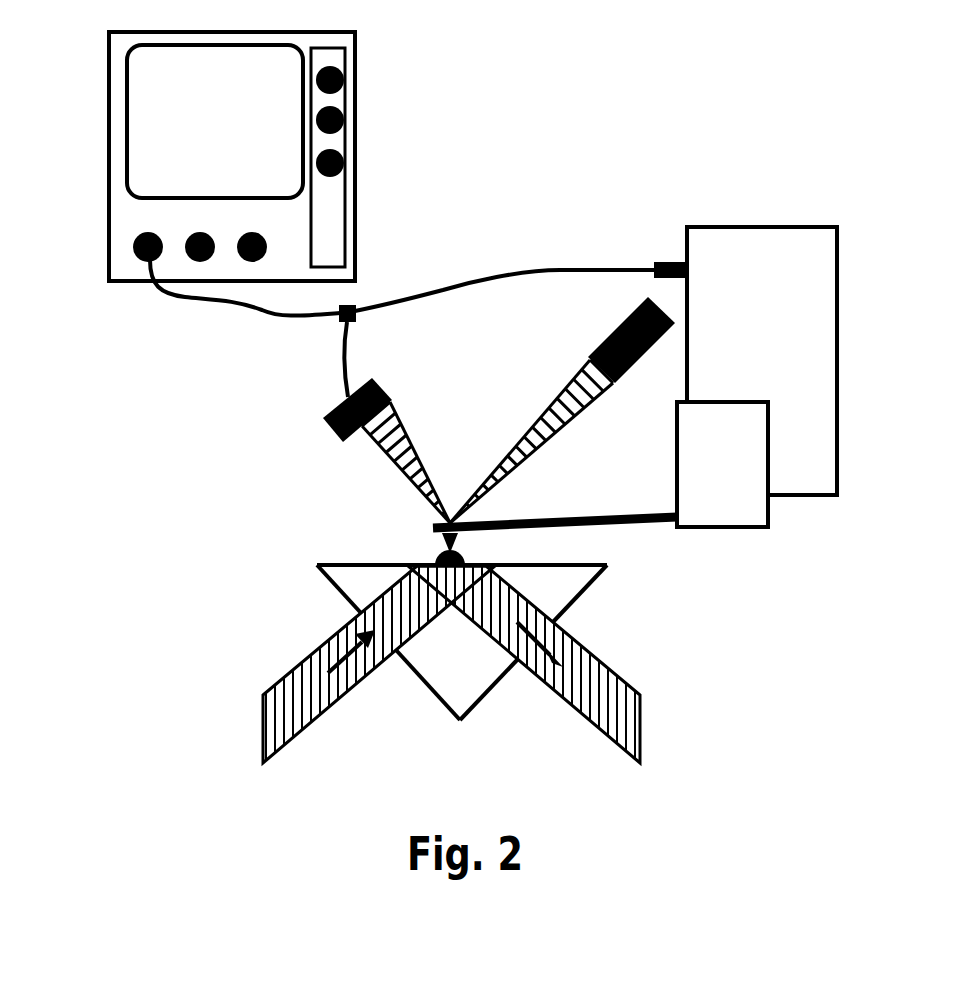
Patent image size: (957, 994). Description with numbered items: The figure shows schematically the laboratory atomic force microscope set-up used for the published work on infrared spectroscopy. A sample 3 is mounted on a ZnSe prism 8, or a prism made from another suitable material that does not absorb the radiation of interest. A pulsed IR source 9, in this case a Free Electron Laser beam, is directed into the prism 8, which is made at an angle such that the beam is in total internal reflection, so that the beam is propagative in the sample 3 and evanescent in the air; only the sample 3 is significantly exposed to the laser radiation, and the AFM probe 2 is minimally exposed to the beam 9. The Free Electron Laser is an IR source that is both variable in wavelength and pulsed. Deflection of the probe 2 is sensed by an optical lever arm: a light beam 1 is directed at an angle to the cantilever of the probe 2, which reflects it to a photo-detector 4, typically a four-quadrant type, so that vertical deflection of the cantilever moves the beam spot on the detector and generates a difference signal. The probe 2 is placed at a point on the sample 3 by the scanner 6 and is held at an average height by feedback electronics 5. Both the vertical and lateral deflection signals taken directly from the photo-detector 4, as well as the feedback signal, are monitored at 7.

The light beam 1 is at (608, 320).
The AFM probe 2 is at (637, 530).
The sample 3 is at (465, 553).
The photo-detector 4 is at (318, 423).
The feedback electronics 5 is at (825, 290).
The scanner 6 is at (760, 532).
The monitor 7 is at (367, 157).
The ZnSe prism 8 is at (317, 575).
The pulsed IR source 9 is at (260, 715).